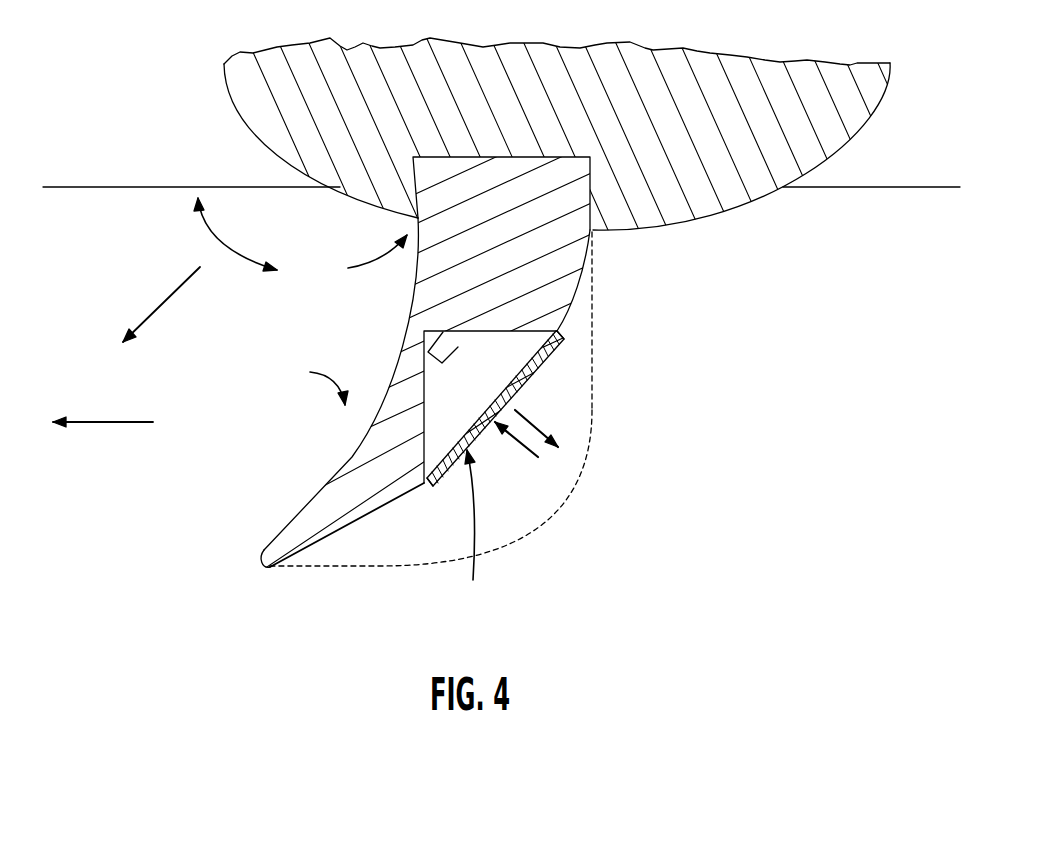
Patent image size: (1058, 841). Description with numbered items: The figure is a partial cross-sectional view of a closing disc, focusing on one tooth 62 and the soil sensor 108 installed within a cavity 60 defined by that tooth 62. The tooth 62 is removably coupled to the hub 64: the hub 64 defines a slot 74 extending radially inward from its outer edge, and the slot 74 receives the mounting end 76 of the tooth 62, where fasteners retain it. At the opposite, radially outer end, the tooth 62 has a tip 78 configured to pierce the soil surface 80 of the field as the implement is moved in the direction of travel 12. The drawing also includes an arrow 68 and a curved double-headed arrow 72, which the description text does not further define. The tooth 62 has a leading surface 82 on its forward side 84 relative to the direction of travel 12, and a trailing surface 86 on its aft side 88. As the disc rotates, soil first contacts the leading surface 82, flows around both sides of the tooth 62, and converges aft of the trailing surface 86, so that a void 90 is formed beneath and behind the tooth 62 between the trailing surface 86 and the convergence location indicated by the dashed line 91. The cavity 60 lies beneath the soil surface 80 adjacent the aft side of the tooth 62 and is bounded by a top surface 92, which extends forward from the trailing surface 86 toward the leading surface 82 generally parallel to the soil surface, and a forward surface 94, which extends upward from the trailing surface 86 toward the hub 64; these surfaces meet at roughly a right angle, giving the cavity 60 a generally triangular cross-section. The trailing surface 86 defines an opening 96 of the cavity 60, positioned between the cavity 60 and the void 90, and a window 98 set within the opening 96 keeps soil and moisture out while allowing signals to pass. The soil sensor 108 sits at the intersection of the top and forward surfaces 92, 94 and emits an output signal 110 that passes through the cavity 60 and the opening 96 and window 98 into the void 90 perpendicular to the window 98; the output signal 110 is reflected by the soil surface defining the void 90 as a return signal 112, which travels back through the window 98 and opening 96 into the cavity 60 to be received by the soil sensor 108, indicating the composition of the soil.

The direction of travel 12 is at (97, 422).
The cavity 60 is at (435, 401).
The tooth 62 is at (673, 370).
The hub 64 is at (837, 156).
The feed direction 68 is at (178, 285).
The rake angle 72 is at (227, 245).
The slot 74 is at (538, 157).
The mounting end 76 is at (365, 260).
The tip 78 is at (264, 555).
The soil surface 80 is at (163, 185).
The leading surface 82 is at (320, 493).
The forward side 84 is at (315, 382).
The trailing surface 86 is at (590, 292).
The aft side 88 is at (595, 383).
The void 90 is at (378, 544).
The dashed line 91 is at (355, 568).
The top surface 92 is at (559, 333).
The forward surface 94 is at (434, 478).
The opening 96 is at (475, 536).
The window 98 is at (472, 430).
The soil sensor 108 is at (458, 348).
The output signal 110 is at (538, 423).
The return signal 112 is at (517, 440).